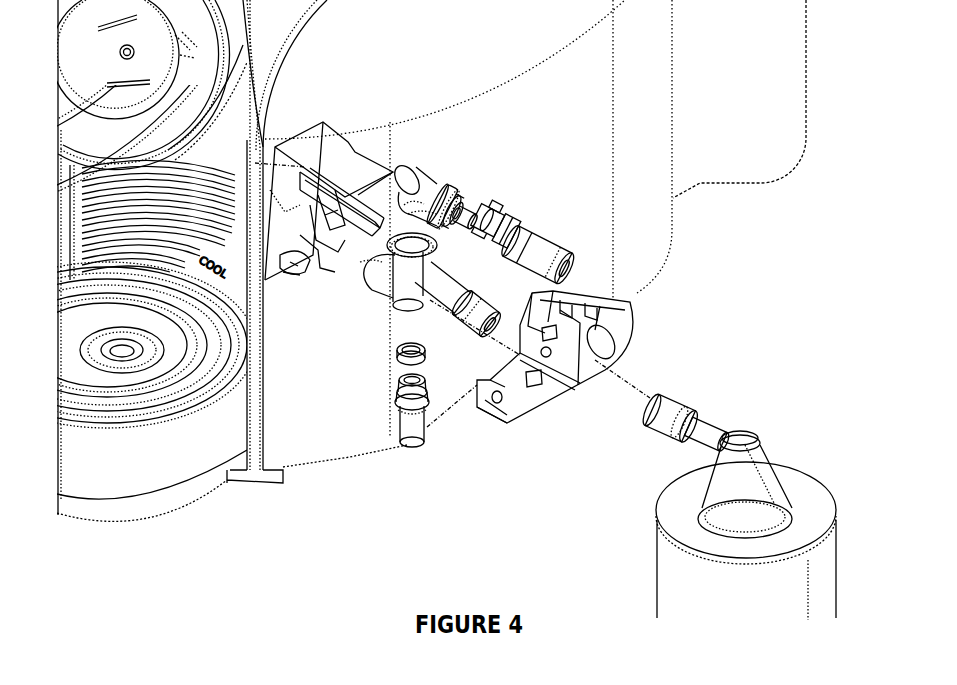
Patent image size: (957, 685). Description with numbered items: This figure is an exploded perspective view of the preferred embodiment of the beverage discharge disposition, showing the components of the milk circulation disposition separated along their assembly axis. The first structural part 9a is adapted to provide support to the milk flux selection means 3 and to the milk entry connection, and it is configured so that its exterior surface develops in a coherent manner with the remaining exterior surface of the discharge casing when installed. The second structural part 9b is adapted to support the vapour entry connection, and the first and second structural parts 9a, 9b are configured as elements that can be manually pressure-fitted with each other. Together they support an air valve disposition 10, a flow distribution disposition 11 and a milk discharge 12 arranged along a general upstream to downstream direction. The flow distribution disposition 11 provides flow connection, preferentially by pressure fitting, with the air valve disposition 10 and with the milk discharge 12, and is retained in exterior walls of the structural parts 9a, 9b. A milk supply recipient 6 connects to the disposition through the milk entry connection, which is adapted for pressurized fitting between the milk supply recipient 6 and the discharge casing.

The milk flux selection means 3 is at (573, 239).
The milk supply recipient 6 is at (752, 506).
The first structural part 9a is at (372, 148).
The second structural part 9b is at (642, 307).
The air valve disposition 10 is at (495, 202).
The flow distribution disposition 11 is at (396, 287).
The milk discharge 12 is at (395, 440).